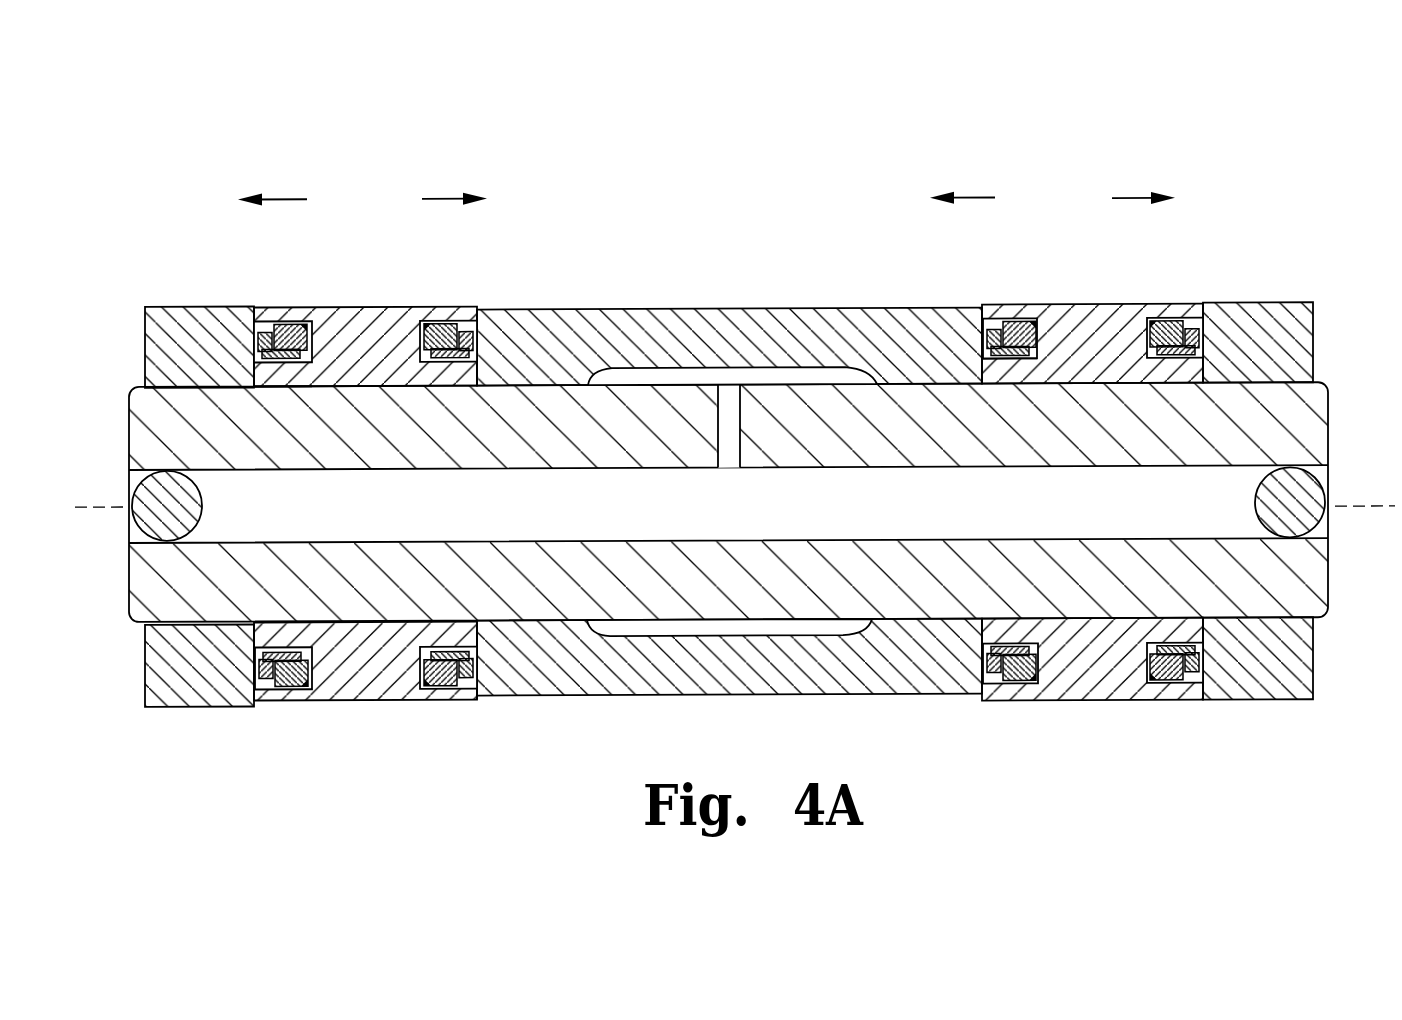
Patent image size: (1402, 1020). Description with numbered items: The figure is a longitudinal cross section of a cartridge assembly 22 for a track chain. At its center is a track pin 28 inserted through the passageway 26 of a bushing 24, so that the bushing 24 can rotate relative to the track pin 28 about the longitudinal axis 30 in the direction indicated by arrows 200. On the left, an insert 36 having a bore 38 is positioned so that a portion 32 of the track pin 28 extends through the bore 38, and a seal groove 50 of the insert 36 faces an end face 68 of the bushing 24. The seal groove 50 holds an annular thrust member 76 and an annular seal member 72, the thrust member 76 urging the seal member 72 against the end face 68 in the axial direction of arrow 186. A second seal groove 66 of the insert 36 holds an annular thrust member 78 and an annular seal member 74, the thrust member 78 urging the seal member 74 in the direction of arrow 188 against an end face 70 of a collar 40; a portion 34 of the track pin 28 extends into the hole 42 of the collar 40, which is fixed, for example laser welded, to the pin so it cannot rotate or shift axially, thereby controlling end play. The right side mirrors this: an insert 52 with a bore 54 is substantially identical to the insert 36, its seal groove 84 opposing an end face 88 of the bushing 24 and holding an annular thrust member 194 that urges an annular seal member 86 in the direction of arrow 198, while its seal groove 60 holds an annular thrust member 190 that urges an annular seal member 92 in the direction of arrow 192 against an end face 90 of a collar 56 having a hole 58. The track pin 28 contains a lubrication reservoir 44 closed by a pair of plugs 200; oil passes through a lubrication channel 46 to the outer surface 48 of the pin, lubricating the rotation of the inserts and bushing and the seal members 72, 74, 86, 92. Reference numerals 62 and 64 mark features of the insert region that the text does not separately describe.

The cartridge assembly 22 is at (1295, 202).
The bushing 24 is at (817, 322).
The passageway 26 is at (740, 372).
The track pin 28 is at (1320, 583).
The longitudinal axis 30 is at (1350, 500).
The portion of track pin 32 is at (373, 403).
The portion of track pin 34 is at (212, 462).
The insert 36 is at (357, 318).
The bore 38 is at (385, 621).
The collar 40 is at (160, 318).
The hole 42 is at (217, 622).
The lubrication reservoir 44 is at (895, 548).
The lubrication channel 46 is at (728, 432).
The outer surface 48 is at (645, 377).
The seal groove 50 is at (473, 324).
The insert 52 is at (1103, 324).
The bore 54 is at (1075, 626).
The collar 56 is at (1295, 318).
The hole 58 is at (1263, 620).
The seal groove 60 is at (1197, 326).
The retaining shoulder 62 is at (480, 634).
The seal pocket 64 is at (248, 638).
The seal groove 66 is at (264, 328).
The end face 68 is at (455, 386).
The end face 70 is at (263, 392).
The annular seal member 72 is at (450, 692).
The annular seal member 74 is at (277, 694).
The annular thrust member 76 is at (443, 321).
The annular thrust member 78 is at (297, 324).
The seal groove 84 is at (985, 325).
The annular seal member 86 is at (1015, 379).
The end face 88 is at (993, 379).
The end face 90 is at (1200, 395).
The annular seal member 92 is at (1180, 687).
The arrow 186 is at (443, 198).
The arrow 188 is at (282, 198).
The annular thrust member 190 is at (1143, 680).
The arrow 192 is at (1135, 200).
The annular thrust member 194 is at (1010, 687).
The arrow 198 is at (975, 199).
The plugs 200 is at (142, 520).